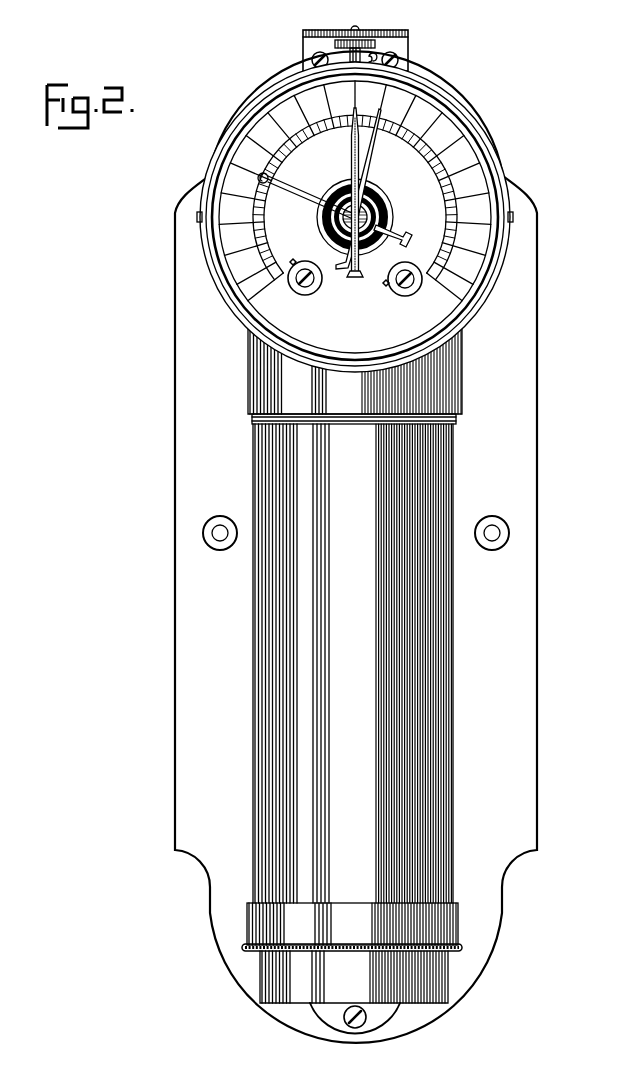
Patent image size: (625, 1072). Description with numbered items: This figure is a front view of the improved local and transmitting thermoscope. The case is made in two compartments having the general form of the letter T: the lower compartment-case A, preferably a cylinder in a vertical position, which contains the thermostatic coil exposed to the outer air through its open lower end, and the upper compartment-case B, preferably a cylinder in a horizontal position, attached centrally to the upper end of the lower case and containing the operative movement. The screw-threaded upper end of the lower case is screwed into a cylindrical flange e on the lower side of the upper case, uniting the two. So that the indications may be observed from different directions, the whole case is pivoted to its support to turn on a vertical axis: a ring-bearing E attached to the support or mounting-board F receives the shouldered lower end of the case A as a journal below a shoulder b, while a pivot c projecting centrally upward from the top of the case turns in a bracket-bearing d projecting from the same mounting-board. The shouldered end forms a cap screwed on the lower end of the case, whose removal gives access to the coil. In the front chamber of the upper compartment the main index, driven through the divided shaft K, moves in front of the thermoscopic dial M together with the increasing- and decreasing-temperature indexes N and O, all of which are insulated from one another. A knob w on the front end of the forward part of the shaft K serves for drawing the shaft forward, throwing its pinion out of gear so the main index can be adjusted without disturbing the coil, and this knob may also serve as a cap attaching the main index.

The lower compartment-case A is at (353, 663).
The upper compartment-case B is at (357, 217).
The ring-bearing E is at (352, 968).
The support or mounting-board F is at (356, 547).
The divided shaft K is at (348, 192).
The thermoscopic dial M is at (355, 191).
The increasing-temperature index N is at (368, 163).
The decreasing-temperature index O is at (305, 196).
The shoulder b is at (356, 954).
The pivot c is at (370, 61).
The bracket-bearing d is at (363, 48).
The cylindrical flange e is at (355, 376).
The knob w is at (393, 217).